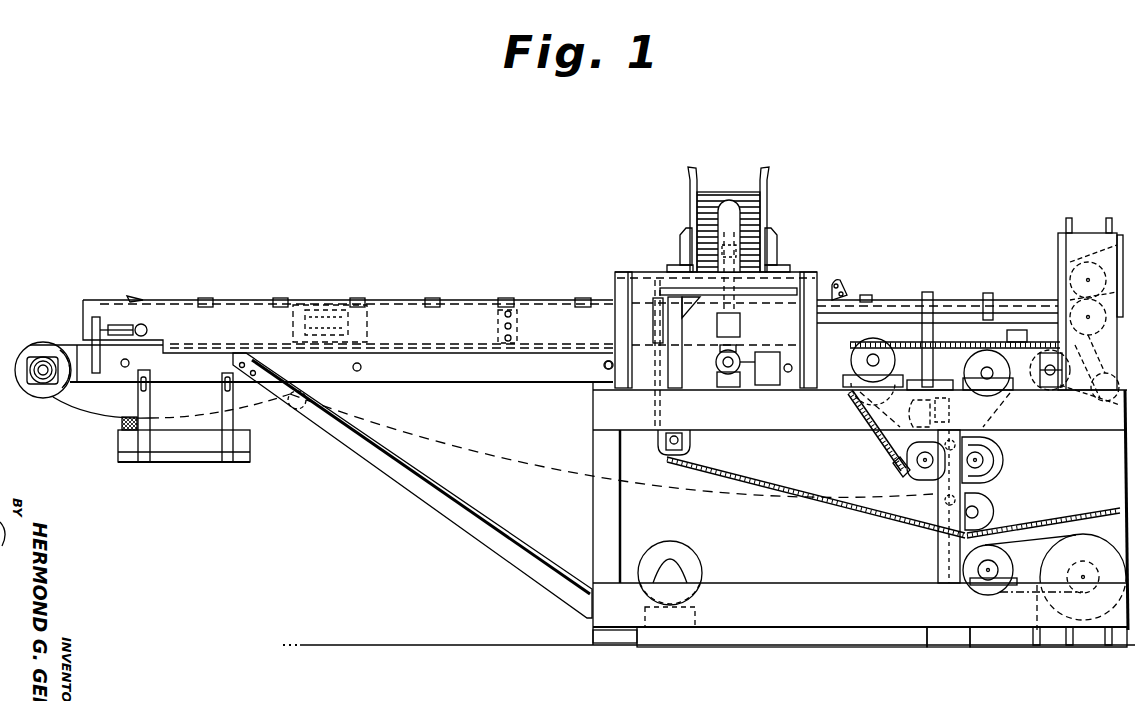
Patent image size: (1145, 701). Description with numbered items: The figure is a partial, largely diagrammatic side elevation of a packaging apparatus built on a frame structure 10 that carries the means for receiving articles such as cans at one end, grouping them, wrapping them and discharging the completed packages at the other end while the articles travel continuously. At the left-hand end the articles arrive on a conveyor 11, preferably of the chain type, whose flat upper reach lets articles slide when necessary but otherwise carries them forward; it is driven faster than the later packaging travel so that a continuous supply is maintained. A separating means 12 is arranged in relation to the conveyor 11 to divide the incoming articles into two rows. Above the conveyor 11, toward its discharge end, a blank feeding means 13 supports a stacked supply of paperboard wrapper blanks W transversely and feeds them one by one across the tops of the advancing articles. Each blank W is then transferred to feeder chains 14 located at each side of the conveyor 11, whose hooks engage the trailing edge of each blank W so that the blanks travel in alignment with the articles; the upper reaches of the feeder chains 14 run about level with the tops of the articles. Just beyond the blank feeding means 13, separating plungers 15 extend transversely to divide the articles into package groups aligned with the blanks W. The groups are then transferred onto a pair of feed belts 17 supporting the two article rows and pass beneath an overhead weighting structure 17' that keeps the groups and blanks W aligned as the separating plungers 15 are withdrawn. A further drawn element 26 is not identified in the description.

The frame structure 10 is at (810, 634).
The conveyor 11 is at (53, 397).
The separating means 12 is at (270, 302).
The blank feeding means 13 is at (690, 173).
The feeder chains 14 is at (757, 476).
The separating plungers 15 is at (892, 468).
The feed belts 17 is at (1072, 385).
The overhead weighting structure 17' is at (1072, 292).
The pivoted arm 26 is at (886, 443).
The wrapper blank W is at (733, 185).